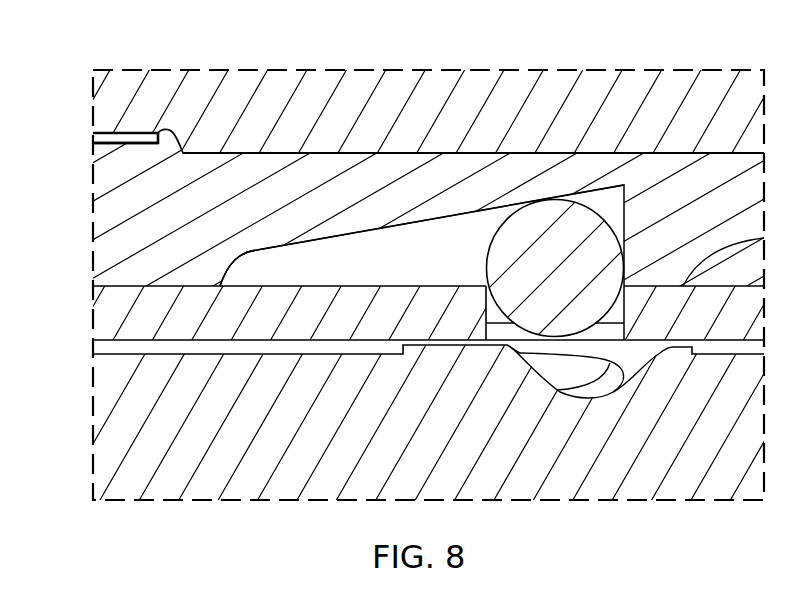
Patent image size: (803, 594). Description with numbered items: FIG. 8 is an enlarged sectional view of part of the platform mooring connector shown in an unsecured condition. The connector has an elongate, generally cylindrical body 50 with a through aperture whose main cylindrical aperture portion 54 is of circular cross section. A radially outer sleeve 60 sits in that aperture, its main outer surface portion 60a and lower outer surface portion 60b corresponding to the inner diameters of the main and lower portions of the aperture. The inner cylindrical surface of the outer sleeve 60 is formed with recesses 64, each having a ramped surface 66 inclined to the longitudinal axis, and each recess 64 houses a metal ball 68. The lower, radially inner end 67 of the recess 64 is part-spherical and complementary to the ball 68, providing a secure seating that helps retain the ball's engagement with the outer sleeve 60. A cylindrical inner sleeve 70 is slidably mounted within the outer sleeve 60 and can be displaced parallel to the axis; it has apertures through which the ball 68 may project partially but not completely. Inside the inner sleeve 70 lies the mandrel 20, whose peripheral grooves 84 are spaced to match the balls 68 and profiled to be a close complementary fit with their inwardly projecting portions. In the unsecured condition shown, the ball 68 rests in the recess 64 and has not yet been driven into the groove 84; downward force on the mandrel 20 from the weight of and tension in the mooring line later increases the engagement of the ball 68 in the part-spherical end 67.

The mandrel 20 is at (410, 465).
The body 50 is at (480, 82).
The main cylindrical aperture portion 54 is at (660, 155).
The radially outer sleeve 60 is at (128, 190).
The main outer surface portion 60a is at (302, 178).
The lower outer surface portion 60b is at (133, 235).
The recess 64 is at (462, 268).
The ramped surface 66 is at (353, 232).
The lower radially inner end 67 is at (252, 256).
The metal ball 68 is at (561, 274).
The inner sleeve 70 is at (107, 320).
The peripheral groove 84 is at (657, 358).